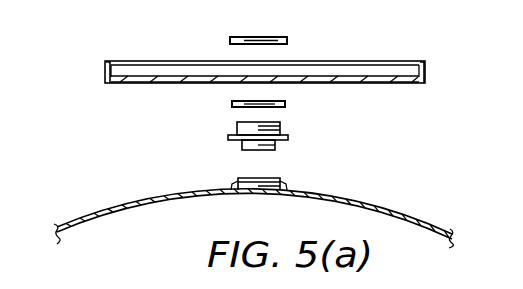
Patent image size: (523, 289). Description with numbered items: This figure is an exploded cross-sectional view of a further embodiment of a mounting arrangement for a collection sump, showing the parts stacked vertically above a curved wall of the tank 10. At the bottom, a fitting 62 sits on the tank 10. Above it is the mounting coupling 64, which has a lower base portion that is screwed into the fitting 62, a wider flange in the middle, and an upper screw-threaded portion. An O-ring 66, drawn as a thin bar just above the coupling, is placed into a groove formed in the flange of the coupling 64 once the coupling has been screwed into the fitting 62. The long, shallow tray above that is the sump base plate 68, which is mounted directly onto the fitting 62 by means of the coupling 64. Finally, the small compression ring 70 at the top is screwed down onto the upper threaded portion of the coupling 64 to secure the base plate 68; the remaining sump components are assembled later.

The tank 10 is at (146, 207).
The fitting 62 is at (281, 181).
The mounting coupling 64 is at (237, 126).
The O-ring 66 is at (285, 104).
The sump base plate 68 is at (106, 82).
The compression ring 70 is at (230, 42).